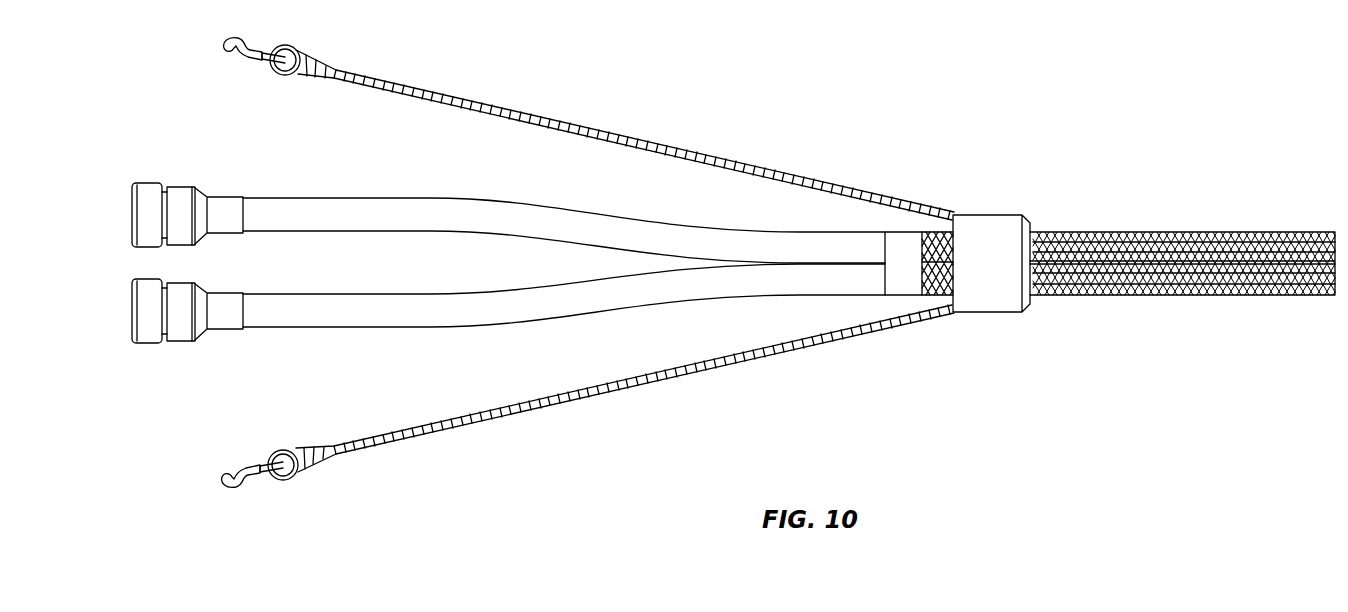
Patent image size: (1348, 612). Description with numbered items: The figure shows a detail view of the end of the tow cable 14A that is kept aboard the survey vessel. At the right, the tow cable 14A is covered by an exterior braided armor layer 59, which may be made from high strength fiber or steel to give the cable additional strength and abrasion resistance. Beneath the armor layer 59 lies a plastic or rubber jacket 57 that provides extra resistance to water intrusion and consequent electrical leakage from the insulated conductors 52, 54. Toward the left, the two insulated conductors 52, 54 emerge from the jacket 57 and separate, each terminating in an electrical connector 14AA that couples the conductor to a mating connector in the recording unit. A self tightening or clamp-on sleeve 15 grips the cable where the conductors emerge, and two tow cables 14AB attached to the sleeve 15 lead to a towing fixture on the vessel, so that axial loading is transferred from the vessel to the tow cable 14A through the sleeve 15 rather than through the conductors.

The electrical connectors 14AA is at (150, 182).
The tow cables 14AB is at (715, 158).
The tow cable 14A is at (1160, 232).
The insulated conductor 52 is at (432, 232).
The insulated conductor 54 is at (310, 295).
The jacket 57 is at (885, 250).
The sleeve 15 is at (990, 312).
The braided armor layer 59 is at (1165, 295).